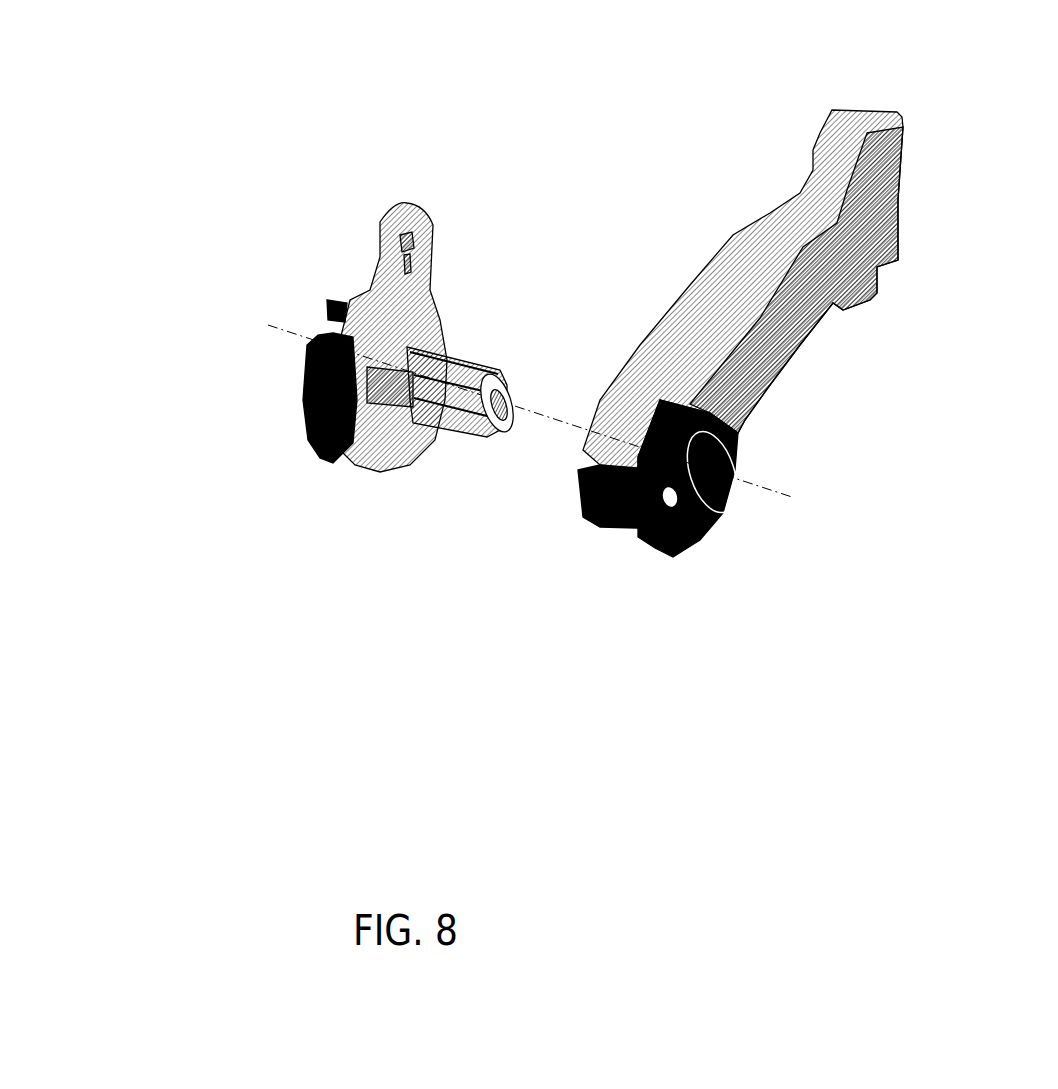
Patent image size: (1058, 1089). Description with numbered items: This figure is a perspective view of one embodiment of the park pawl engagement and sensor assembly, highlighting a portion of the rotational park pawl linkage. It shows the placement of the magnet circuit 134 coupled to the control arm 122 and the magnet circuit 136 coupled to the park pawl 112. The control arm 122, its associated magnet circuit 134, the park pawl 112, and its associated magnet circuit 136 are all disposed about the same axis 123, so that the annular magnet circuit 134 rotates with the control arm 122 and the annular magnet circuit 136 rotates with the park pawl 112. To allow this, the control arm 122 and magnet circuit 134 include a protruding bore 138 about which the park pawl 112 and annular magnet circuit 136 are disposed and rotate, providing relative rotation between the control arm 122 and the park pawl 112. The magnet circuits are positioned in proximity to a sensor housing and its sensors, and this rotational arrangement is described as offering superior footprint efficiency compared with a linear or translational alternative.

The park pawl 112 is at (739, 217).
The control arm 122 is at (380, 194).
The axis 123 is at (543, 393).
The magnet circuit 134 is at (285, 443).
The magnet circuit 136 is at (562, 524).
The protruding bore 138 is at (465, 333).